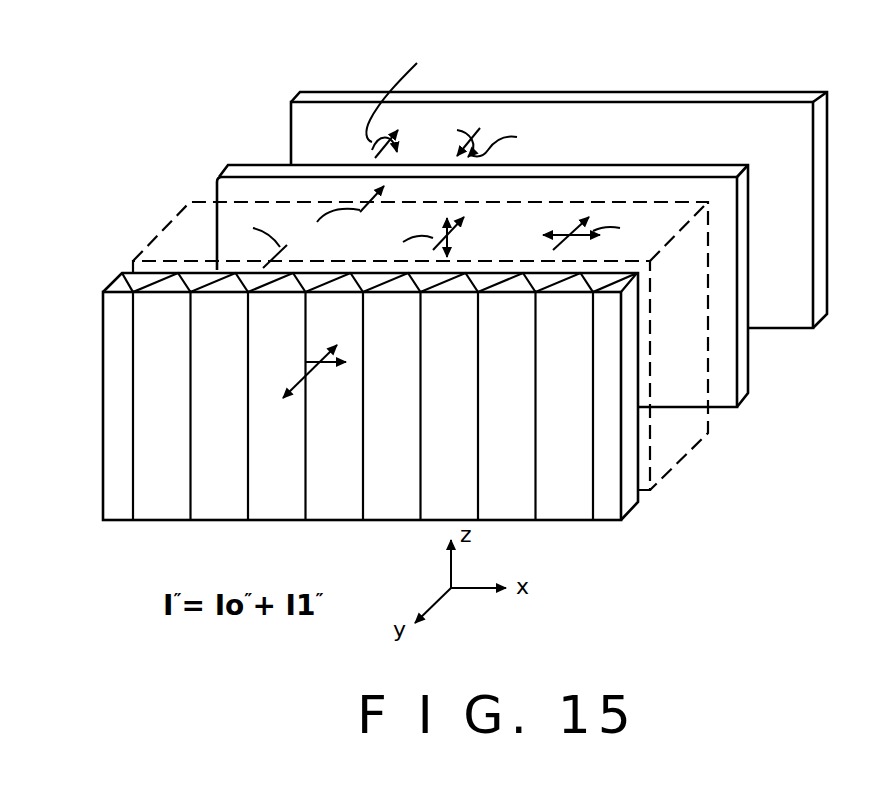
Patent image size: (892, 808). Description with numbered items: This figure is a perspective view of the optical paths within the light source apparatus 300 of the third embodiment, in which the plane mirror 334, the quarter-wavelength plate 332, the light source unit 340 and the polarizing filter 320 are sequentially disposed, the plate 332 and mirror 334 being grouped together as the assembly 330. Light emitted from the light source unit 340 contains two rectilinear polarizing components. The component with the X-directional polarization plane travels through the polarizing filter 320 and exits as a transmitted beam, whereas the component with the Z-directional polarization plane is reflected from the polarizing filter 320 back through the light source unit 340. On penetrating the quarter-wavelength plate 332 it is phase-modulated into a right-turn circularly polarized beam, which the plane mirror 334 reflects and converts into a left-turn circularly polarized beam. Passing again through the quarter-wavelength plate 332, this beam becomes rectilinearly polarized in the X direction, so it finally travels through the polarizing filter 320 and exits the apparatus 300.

The light source apparatus 300 is at (553, 38).
The polarizing filter 320 is at (113, 393).
The retardation plate assembly 330 is at (290, 80).
The λ/4 wavelength plate 332 is at (306, 172).
The plane mirror 334 is at (654, 101).
The light source unit 340 is at (170, 230).